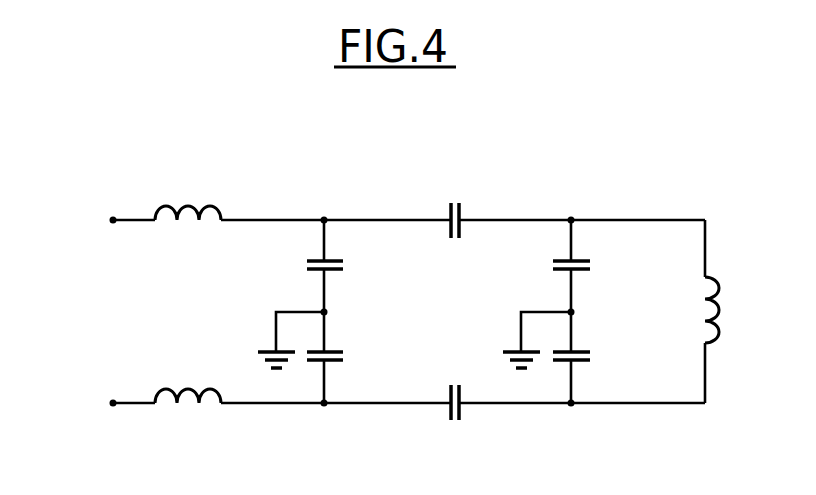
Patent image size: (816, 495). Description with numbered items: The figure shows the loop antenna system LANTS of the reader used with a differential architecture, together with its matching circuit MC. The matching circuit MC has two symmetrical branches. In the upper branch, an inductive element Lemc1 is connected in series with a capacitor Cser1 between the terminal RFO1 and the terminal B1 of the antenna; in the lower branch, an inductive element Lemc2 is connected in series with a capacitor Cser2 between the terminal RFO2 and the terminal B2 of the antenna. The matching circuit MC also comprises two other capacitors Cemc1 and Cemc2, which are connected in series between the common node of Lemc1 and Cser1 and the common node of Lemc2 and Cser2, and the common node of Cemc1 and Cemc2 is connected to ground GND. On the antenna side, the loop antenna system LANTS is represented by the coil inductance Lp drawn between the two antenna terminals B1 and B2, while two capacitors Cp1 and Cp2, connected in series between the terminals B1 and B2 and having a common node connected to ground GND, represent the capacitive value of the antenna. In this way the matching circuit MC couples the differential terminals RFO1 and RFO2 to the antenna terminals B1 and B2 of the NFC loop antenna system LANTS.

The terminal RFO1 is at (78, 220).
The terminal RFO2 is at (76, 403).
The inductive element Lemc1 is at (188, 226).
The inductive element Lemc2 is at (188, 409).
The capacitor Cemc1 is at (364, 270).
The capacitor Cemc2 is at (364, 363).
The capacitor Cser1 is at (452, 234).
The capacitor Cser2 is at (452, 416).
The capacitor Cp1 is at (594, 268).
The capacitor Cp2 is at (594, 363).
The inductance value Lp is at (697, 310).
The terminal of the antenna B1 is at (707, 279).
The terminal of the antenna B2 is at (707, 342).
The ground GND is at (386, 340).
The matching circuit MC is at (424, 182).
The loop antenna system LANTS is at (632, 427).